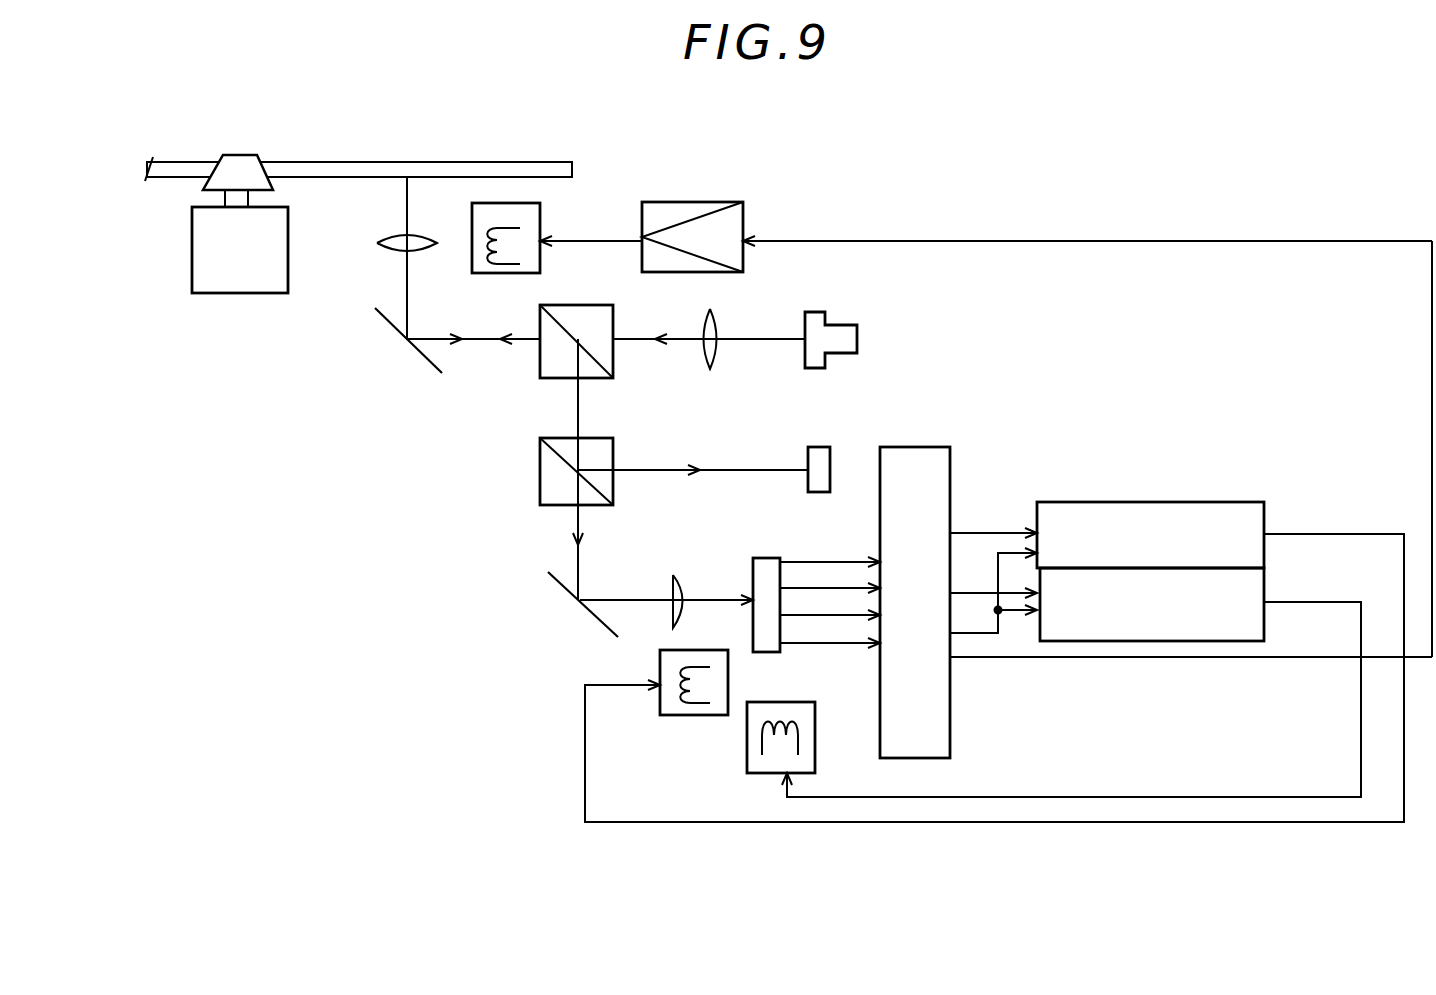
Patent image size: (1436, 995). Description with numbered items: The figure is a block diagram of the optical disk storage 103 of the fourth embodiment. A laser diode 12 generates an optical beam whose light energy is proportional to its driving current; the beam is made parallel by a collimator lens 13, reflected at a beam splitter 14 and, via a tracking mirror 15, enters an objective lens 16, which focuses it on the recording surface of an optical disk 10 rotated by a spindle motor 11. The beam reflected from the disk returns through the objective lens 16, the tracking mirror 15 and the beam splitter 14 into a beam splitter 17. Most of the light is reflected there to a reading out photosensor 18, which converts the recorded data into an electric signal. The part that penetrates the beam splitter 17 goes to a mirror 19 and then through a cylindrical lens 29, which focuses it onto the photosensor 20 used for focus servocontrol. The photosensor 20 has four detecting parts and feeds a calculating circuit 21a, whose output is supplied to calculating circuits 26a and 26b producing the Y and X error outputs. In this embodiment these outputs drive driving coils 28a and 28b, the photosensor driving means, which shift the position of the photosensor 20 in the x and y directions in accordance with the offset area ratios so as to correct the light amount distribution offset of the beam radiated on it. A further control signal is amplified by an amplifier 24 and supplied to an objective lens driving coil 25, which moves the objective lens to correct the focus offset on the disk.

The optical disk storage 103 is at (864, 103).
The optical disk 10 is at (440, 160).
The spindle motor 11 is at (288, 243).
The laser diode 12 is at (840, 322).
The collimator lens 13 is at (720, 328).
The beam splitter 14 is at (560, 305).
The tracking mirror 15 is at (382, 323).
The objective lens 16 is at (430, 243).
The beam splitter 17 is at (603, 437).
The reading out photosensor 18 is at (816, 447).
The mirror 19 is at (562, 585).
The photosensor 20 is at (765, 558).
The calculating circuit 21a is at (890, 447).
The amplifier 24 is at (745, 228).
The objective lens driving coil 25 is at (542, 227).
The calculating circuit 26a is at (1110, 502).
The calculating circuit 26b is at (1157, 641).
The driving coil 28a is at (690, 715).
The driving coil 28b is at (764, 702).
The cylindrical lens 29 is at (673, 592).